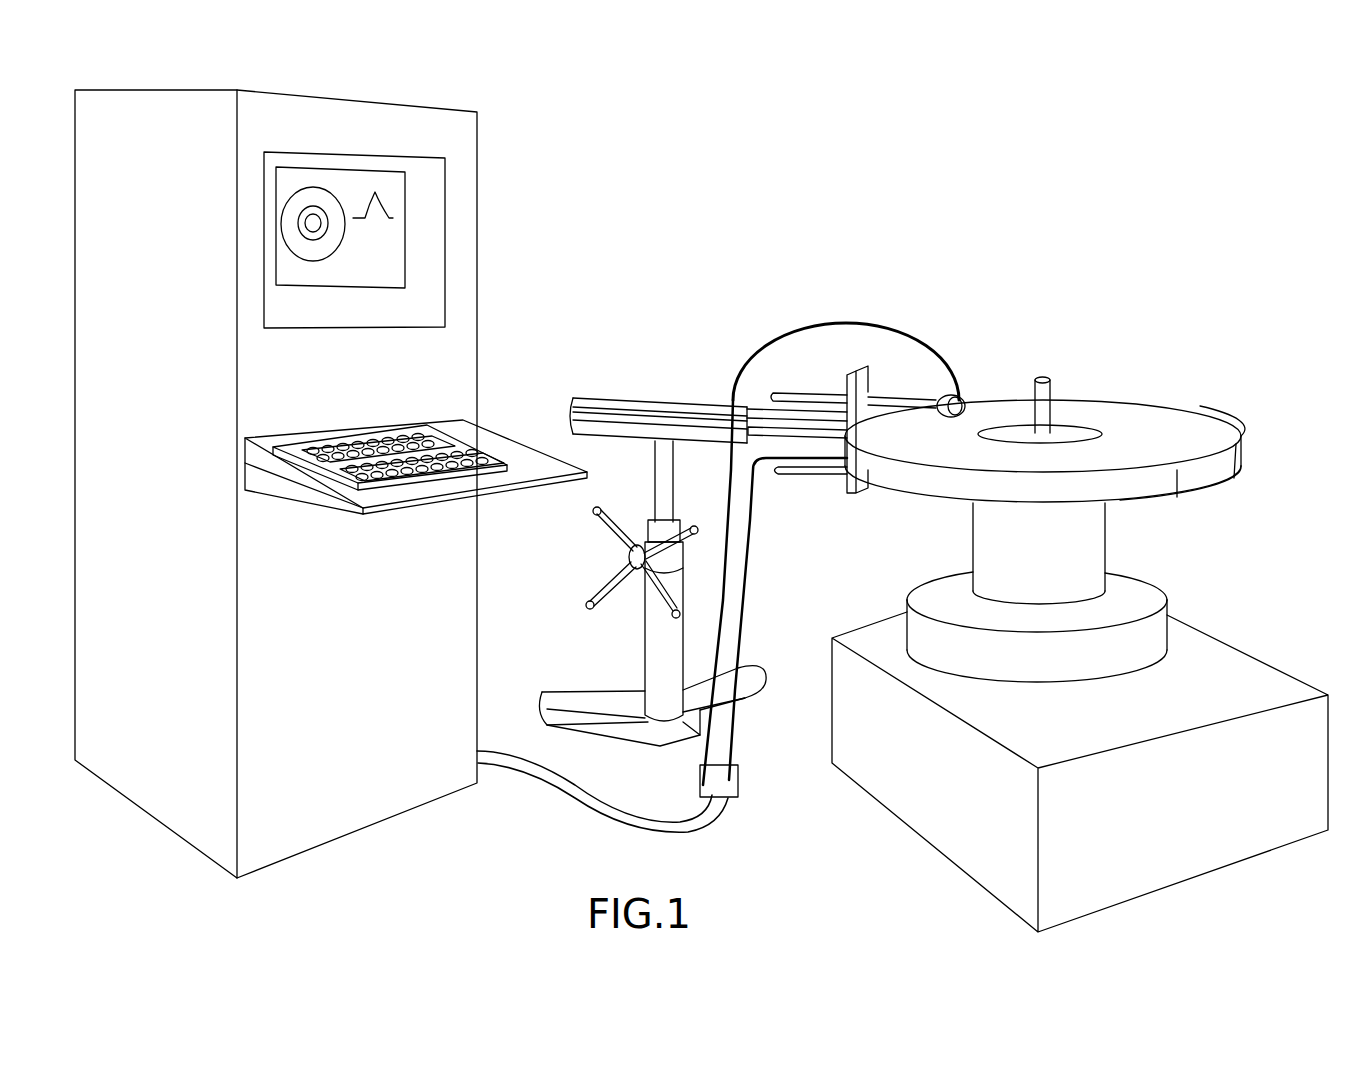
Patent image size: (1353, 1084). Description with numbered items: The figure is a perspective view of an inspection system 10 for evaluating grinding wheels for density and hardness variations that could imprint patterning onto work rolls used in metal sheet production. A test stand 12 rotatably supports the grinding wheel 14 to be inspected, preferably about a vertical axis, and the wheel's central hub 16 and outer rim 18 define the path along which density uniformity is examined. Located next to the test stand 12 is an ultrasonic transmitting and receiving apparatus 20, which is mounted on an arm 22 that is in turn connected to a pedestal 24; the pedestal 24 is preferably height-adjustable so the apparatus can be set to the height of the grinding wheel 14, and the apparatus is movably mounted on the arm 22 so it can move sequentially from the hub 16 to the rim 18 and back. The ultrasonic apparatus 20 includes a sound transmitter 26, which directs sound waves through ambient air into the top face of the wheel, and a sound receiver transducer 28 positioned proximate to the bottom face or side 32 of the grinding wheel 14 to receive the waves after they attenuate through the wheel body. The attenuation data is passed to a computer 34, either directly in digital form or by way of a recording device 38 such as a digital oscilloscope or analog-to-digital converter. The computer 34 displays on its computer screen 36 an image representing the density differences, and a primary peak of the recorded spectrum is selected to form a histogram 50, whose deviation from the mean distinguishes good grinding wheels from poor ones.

The inspection system 10 is at (662, 322).
The test stand 12 is at (986, 526).
The grinding wheel 14 is at (1132, 407).
The hub 16 is at (1073, 425).
The rim 18 is at (1218, 428).
The ultrasonic transmitting and receiving apparatus 20 is at (906, 383).
The arm 22 is at (665, 398).
The pedestal 24 is at (655, 634).
The sound transmitter 26 is at (957, 398).
The sound receiver transducer 28 is at (888, 492).
The bottom face or side 32 is at (1184, 500).
The computer 34 is at (506, 246).
The computer screen 36 is at (388, 242).
The recording device 38 is at (459, 558).
The histogram 50 is at (362, 212).